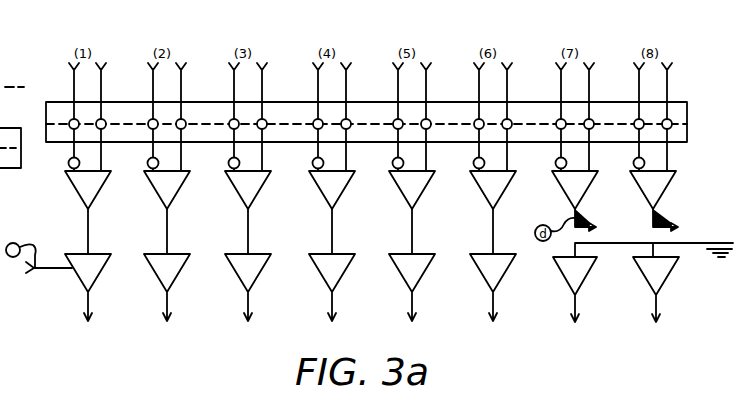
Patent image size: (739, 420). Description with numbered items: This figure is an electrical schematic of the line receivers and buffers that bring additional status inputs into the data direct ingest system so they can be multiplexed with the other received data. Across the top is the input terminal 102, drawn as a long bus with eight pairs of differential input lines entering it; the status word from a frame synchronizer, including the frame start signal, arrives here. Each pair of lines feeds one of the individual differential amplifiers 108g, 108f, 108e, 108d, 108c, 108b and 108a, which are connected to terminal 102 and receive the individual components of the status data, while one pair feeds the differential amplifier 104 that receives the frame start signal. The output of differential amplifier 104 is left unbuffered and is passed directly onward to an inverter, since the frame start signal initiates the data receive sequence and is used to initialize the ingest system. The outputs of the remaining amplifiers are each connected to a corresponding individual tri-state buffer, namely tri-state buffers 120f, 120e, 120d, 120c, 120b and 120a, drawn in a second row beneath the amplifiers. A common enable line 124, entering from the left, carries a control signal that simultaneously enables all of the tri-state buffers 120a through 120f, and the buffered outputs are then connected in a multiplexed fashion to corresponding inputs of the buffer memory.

The input terminal 102 is at (687, 135).
The differential amplifier 104 is at (566, 204).
The differential amplifier 108a is at (644, 204).
The differential amplifier 108b is at (489, 204).
The differential amplifier 108c is at (408, 204).
The differential amplifier 108d is at (328, 204).
The differential amplifier 108e is at (244, 204).
The differential amplifier 108f is at (163, 204).
The differential amplifier 108g is at (84, 204).
The tri-state buffer 120a is at (499, 282).
The tri-state buffer 120b is at (418, 282).
The tri-state buffer 120c is at (338, 282).
The tri-state buffer 120d is at (254, 282).
The tri-state buffer 120e is at (173, 282).
The tri-state buffer 120f is at (94, 282).
The common enable line 124 is at (62, 270).